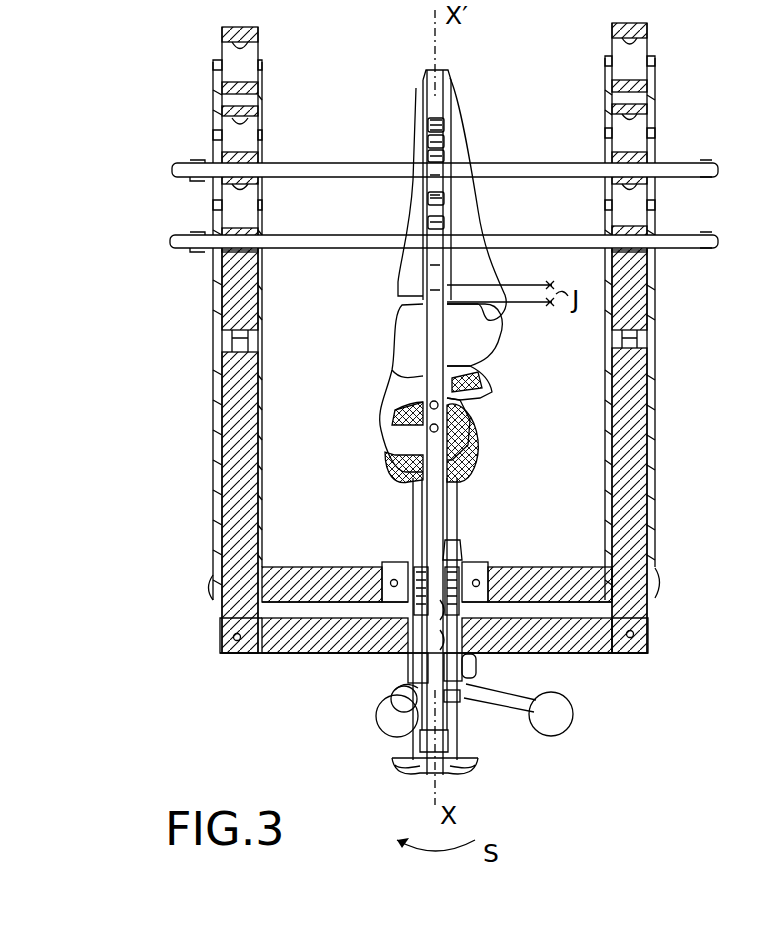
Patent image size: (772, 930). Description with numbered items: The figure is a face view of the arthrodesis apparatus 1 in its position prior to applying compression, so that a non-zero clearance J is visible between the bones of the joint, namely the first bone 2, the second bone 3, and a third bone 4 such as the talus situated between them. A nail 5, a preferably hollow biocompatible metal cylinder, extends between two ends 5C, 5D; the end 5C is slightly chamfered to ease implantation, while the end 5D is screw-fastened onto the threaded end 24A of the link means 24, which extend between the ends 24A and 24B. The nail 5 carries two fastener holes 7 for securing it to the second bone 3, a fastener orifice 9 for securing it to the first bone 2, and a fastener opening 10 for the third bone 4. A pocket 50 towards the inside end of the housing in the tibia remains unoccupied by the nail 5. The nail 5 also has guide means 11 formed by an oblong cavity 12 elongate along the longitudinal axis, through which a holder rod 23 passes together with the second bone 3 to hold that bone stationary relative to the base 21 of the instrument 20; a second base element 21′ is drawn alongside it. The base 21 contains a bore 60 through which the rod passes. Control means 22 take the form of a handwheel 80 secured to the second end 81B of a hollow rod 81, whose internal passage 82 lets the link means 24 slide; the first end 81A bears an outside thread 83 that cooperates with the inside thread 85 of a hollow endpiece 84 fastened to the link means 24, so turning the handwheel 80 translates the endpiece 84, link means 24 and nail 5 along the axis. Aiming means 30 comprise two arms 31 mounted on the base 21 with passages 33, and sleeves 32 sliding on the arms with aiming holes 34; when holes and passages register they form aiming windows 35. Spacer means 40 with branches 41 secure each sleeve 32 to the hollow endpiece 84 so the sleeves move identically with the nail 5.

The arthrodesis apparatus 1 is at (670, 495).
The first bone 2 is at (452, 462).
The second bone 3 is at (498, 302).
The third bone 4 is at (478, 352).
The nail 5 is at (425, 130).
The end of the nail 5C is at (450, 122).
The end of the nail 5D is at (415, 442).
The fastener holes 7 is at (440, 150).
The fastener orifice 9 is at (474, 430).
The fastener opening 10 is at (425, 357).
The guide means 11 is at (428, 202).
The oblong cavity 12 is at (430, 187).
The instrument 20 is at (326, 688).
The base 21 is at (606, 654).
The base plate 21′ is at (300, 634).
The control means 22 is at (456, 702).
The holder rod 23 is at (550, 166).
The link means 24 is at (432, 522).
The end of the link means 24A is at (470, 470).
The end of the link means 24B is at (445, 775).
The aiming means 30 is at (212, 440).
The arm 31 is at (232, 495).
The sleeve 32 is at (216, 302).
The passages 33 is at (238, 38).
The aiming holes 34 is at (262, 84).
The aiming windows 35 is at (212, 148).
The spacer means 40 is at (322, 567).
The branch 41 is at (285, 580).
The pocket 50 is at (425, 87).
The bore 60 is at (476, 667).
The handwheel 80 is at (560, 722).
The hollow rod 81 is at (416, 642).
The first end of the hollow rod 81A is at (452, 557).
The second end of the hollow rod 81B is at (405, 727).
The internal passage 82 is at (420, 622).
The outside thread 83 is at (450, 577).
The hollow endpiece 84 is at (418, 582).
The inside thread 85 is at (450, 620).